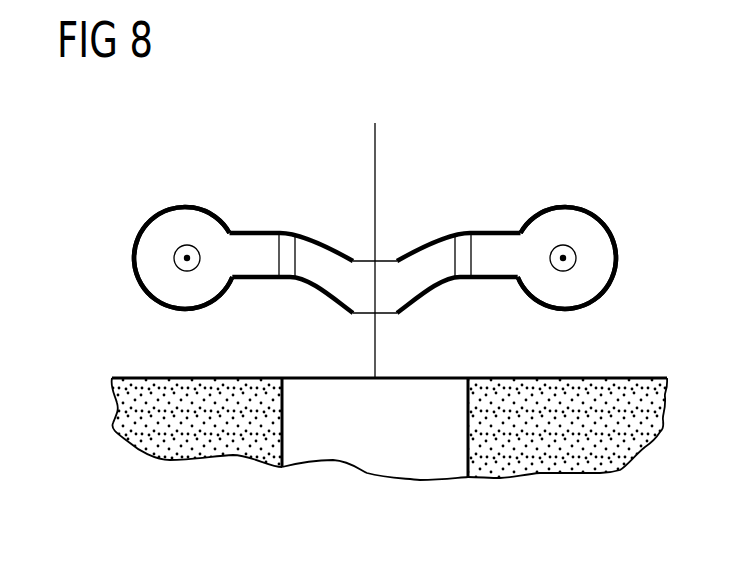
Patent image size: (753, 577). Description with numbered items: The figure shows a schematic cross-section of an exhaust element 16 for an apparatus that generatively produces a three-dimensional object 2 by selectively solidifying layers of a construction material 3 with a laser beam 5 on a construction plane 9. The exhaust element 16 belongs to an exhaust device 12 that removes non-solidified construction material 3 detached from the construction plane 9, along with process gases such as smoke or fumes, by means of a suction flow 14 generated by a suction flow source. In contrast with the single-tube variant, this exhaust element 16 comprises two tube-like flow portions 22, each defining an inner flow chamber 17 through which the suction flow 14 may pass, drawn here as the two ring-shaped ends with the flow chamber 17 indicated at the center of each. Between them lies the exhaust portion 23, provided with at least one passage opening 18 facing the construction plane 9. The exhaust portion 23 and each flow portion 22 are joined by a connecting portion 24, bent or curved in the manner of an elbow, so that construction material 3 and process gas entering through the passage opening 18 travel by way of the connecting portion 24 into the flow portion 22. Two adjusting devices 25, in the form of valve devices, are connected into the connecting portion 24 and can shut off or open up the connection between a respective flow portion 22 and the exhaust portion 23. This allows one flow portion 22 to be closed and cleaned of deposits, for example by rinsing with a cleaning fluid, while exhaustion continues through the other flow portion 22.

The three-dimensional object 2 is at (378, 452).
The construction material 3 is at (202, 435).
The laser beam 5 is at (376, 153).
The construction plane 9 is at (400, 438).
The exhaust device 12 is at (372, 206).
The suction flow 14 is at (175, 259).
The exhaust element 16 is at (372, 231).
The flow chamber 17 is at (170, 242).
The passage opening 18 is at (351, 198).
The flow portion 22 is at (137, 258).
The exhaust portion 23 is at (366, 248).
The connecting portion 24 is at (250, 233).
The adjusting device 25 is at (287, 236).